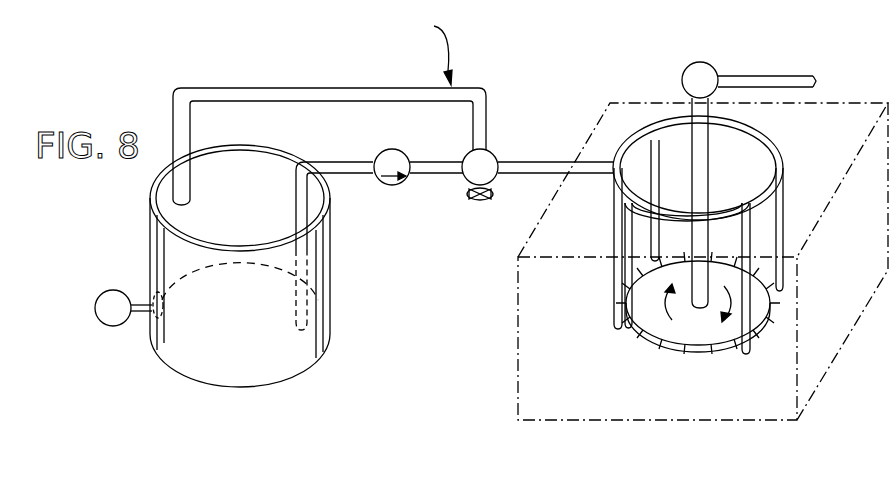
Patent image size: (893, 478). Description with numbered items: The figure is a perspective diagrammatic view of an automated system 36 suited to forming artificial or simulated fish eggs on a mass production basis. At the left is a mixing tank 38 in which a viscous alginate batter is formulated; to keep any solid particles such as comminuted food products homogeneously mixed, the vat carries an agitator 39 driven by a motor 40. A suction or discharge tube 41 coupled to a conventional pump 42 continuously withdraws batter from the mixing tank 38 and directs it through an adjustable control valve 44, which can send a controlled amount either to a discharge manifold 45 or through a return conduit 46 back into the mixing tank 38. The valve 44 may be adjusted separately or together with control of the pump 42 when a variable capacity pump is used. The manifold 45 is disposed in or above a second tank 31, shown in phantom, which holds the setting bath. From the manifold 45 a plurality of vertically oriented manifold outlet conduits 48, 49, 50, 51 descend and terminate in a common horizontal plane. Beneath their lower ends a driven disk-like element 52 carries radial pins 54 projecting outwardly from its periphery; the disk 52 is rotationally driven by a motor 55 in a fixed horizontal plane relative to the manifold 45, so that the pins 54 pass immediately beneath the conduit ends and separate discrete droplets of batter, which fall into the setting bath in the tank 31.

The second tank 31 is at (605, 100).
The automated system 36 is at (428, 49).
The mixing tank 38 is at (150, 222).
The agitator 39 is at (150, 338).
The motor 40 is at (97, 298).
The suction or discharge tube 41 is at (308, 212).
The pump 42 is at (378, 152).
The adjustable control valve 44 is at (495, 155).
The discharge manifold 45 is at (638, 130).
The return conduit 46 is at (304, 88).
The manifold outlet conduit 48 is at (780, 195).
The manifold outlet conduit 49 is at (655, 155).
The manifold outlet conduit 50 is at (618, 222).
The manifold outlet conduit 51 is at (745, 243).
The disk-like element 52 is at (695, 352).
The radial pins 54 is at (638, 345).
The motor 55 is at (710, 65).